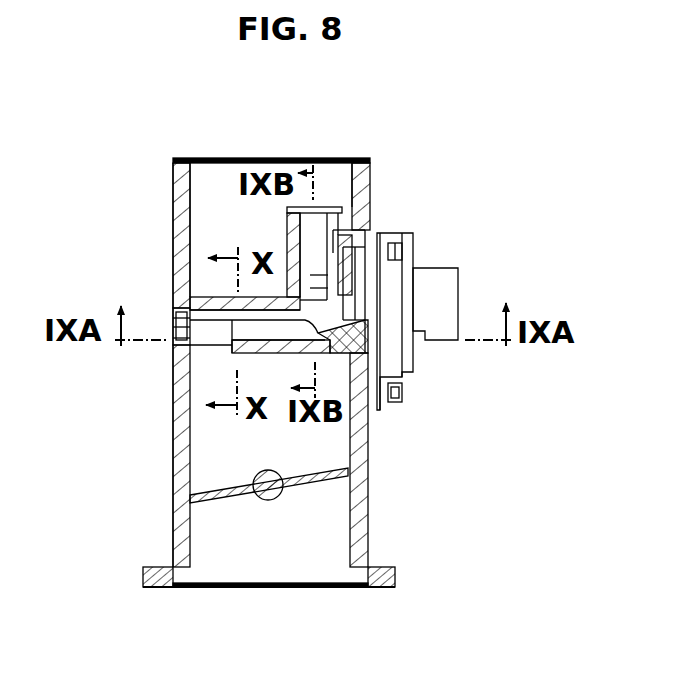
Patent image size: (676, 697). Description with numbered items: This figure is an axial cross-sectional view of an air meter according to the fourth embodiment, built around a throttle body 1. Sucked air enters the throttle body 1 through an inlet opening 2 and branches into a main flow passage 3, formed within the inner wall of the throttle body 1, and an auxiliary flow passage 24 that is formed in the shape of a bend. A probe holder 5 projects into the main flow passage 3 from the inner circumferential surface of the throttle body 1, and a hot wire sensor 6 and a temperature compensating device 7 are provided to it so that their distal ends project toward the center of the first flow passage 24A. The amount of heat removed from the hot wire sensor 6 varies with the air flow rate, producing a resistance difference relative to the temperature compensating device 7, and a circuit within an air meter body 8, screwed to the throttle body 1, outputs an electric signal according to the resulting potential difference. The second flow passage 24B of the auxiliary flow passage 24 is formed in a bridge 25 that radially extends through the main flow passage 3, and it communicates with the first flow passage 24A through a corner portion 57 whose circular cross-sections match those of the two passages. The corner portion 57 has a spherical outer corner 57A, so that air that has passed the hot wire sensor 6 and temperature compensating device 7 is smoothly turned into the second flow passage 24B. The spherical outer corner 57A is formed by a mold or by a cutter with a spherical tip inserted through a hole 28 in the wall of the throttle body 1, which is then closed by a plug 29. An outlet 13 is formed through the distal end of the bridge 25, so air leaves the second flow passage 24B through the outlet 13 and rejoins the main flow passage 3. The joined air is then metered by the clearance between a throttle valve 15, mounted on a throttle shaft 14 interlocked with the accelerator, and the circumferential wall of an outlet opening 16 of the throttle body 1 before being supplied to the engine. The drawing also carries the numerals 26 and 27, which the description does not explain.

The throttle body 1 is at (173, 203).
The inlet opening 2 is at (247, 158).
The main flow passage 3 is at (267, 223).
The probe holder 5 is at (353, 159).
The hot wire sensor 6 is at (348, 232).
The temperature compensating device 7 is at (368, 334).
The air meter body 8 is at (450, 285).
The outlet 13 is at (211, 330).
The throttle shaft 14 is at (270, 500).
The throttle valve 15 is at (330, 485).
The outlet opening 16 is at (321, 585).
The auxiliary flow passage 24 is at (258, 238).
The first flow passage 24A is at (374, 182).
The second flow passage 24B is at (248, 337).
The bridge 25 is at (186, 265).
The screw 26 is at (403, 392).
The support plate 27 is at (303, 350).
The hole 28 is at (171, 318).
The plug 29 is at (176, 346).
The corner portion 57 is at (232, 322).
The spherical outer corner 57A is at (350, 380).